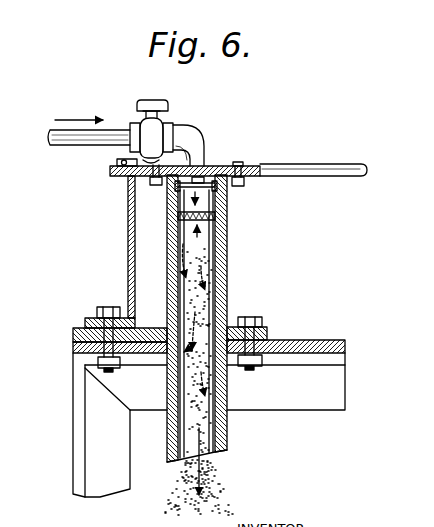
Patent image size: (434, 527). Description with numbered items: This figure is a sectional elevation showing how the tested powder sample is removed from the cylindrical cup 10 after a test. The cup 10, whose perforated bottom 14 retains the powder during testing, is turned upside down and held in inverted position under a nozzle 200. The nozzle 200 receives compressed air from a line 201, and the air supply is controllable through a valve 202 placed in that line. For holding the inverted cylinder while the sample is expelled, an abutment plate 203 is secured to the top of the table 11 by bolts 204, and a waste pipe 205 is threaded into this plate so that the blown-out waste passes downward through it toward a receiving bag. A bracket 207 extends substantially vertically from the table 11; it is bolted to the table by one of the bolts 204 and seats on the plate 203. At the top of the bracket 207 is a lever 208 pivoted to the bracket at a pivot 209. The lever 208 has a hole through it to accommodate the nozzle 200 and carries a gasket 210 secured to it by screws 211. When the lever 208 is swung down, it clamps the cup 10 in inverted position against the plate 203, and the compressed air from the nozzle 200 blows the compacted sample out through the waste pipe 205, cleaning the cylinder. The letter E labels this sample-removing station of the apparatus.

The compressed air line 201 is at (82, 139).
The valve 202 is at (147, 128).
The nozzle 200 is at (195, 146).
The lever 208 is at (293, 158).
The pivot 209 is at (127, 171).
The bracket 207 is at (128, 215).
The assembly E is at (77, 251).
The screws 211 is at (152, 186).
The gasket 210 is at (223, 209).
The perforated bottom 14 is at (225, 234).
The cylindrical cup 10 is at (228, 262).
The waste pipe 205 is at (224, 433).
The bolts 204 is at (103, 310).
The abutment plate 203 is at (92, 334).
The table 11 is at (308, 346).